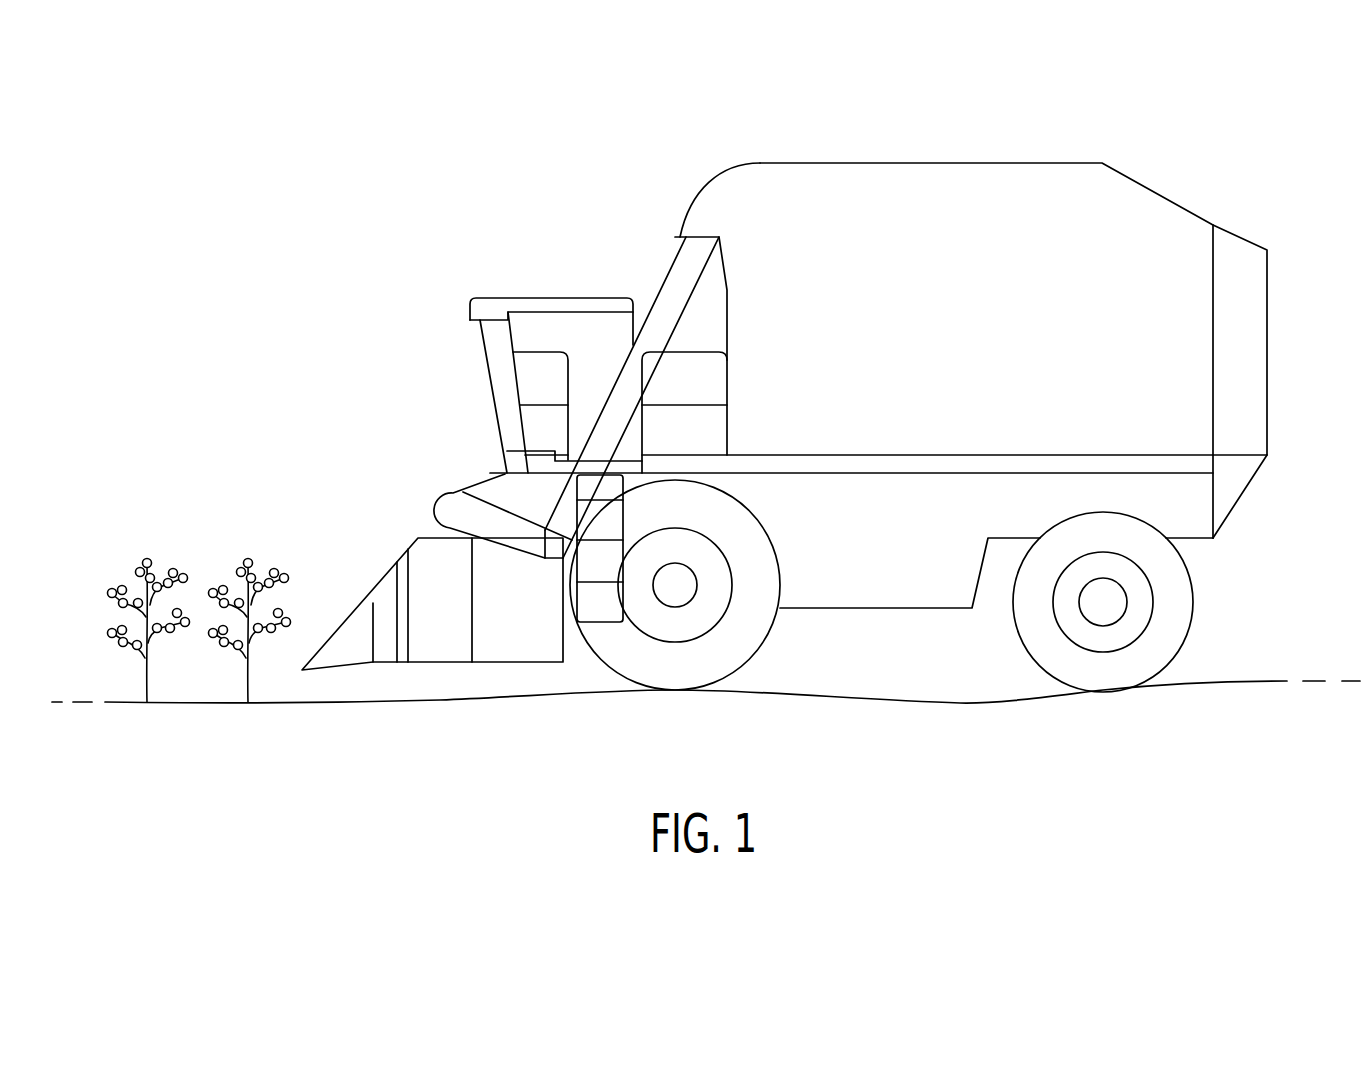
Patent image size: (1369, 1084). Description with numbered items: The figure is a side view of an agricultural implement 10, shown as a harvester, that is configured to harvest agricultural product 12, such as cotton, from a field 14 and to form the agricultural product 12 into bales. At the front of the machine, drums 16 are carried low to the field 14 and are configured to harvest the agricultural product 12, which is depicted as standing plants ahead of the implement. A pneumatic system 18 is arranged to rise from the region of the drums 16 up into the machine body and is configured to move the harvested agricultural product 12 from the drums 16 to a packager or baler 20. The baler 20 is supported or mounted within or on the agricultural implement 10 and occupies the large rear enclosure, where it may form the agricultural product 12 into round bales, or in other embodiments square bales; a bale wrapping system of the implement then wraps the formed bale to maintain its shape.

The agricultural implement 10 is at (1163, 713).
The agricultural product 12 is at (205, 673).
The field 14 is at (355, 705).
The drums 16 is at (423, 550).
The pneumatic system 18 is at (676, 282).
The baler 20 is at (1178, 182).